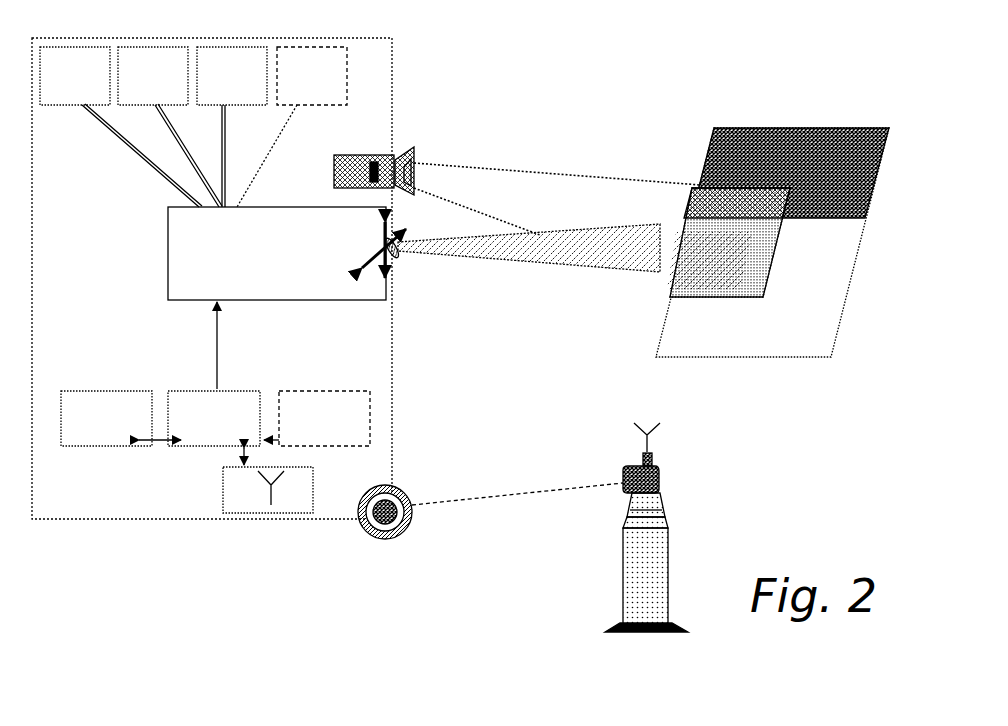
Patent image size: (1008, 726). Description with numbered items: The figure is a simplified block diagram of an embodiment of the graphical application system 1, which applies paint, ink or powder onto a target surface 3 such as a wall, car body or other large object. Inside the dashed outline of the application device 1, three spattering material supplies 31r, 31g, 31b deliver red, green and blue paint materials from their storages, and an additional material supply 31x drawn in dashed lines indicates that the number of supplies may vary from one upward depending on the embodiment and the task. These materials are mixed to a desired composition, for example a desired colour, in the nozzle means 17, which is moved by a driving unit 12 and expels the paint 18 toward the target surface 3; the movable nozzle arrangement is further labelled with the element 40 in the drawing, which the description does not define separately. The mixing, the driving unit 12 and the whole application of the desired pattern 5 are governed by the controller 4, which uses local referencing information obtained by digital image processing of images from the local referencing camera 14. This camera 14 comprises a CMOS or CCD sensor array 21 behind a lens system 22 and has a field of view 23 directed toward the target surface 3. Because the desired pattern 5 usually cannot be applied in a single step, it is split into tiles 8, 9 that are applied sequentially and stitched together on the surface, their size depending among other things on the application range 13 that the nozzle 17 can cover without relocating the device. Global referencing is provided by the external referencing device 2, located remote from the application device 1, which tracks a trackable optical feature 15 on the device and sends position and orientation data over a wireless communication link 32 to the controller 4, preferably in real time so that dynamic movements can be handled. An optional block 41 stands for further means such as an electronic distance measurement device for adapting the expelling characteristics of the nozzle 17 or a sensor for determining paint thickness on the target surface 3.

The graphical application system 1 is at (399, 425).
The external referencing device 2 is at (624, 545).
The target surface 3 is at (780, 116).
The controller 4 is at (209, 383).
The desired graphical pattern 5 is at (106, 418).
The tile 8 is at (803, 140).
The tile 9 is at (737, 248).
The driving unit 12 is at (277, 253).
The application range 13 is at (663, 297).
The local referencing camera 14 is at (353, 165).
The trackable optical feature 15 is at (367, 535).
The nozzle means 17 is at (396, 256).
The paint 18 is at (465, 250).
The sensor array 21 is at (382, 161).
The lens system 22 is at (411, 162).
The field of view 23 is at (520, 170).
The spattering material supply 31r is at (121, 127).
The spattering material supply 31g is at (170, 127).
The spattering material supply 31b is at (232, 127).
The additional material supply 31x is at (292, 127).
The wireless communication link 32 is at (262, 500).
The mirror actuator 40 is at (394, 260).
The optional block 41 is at (324, 418).